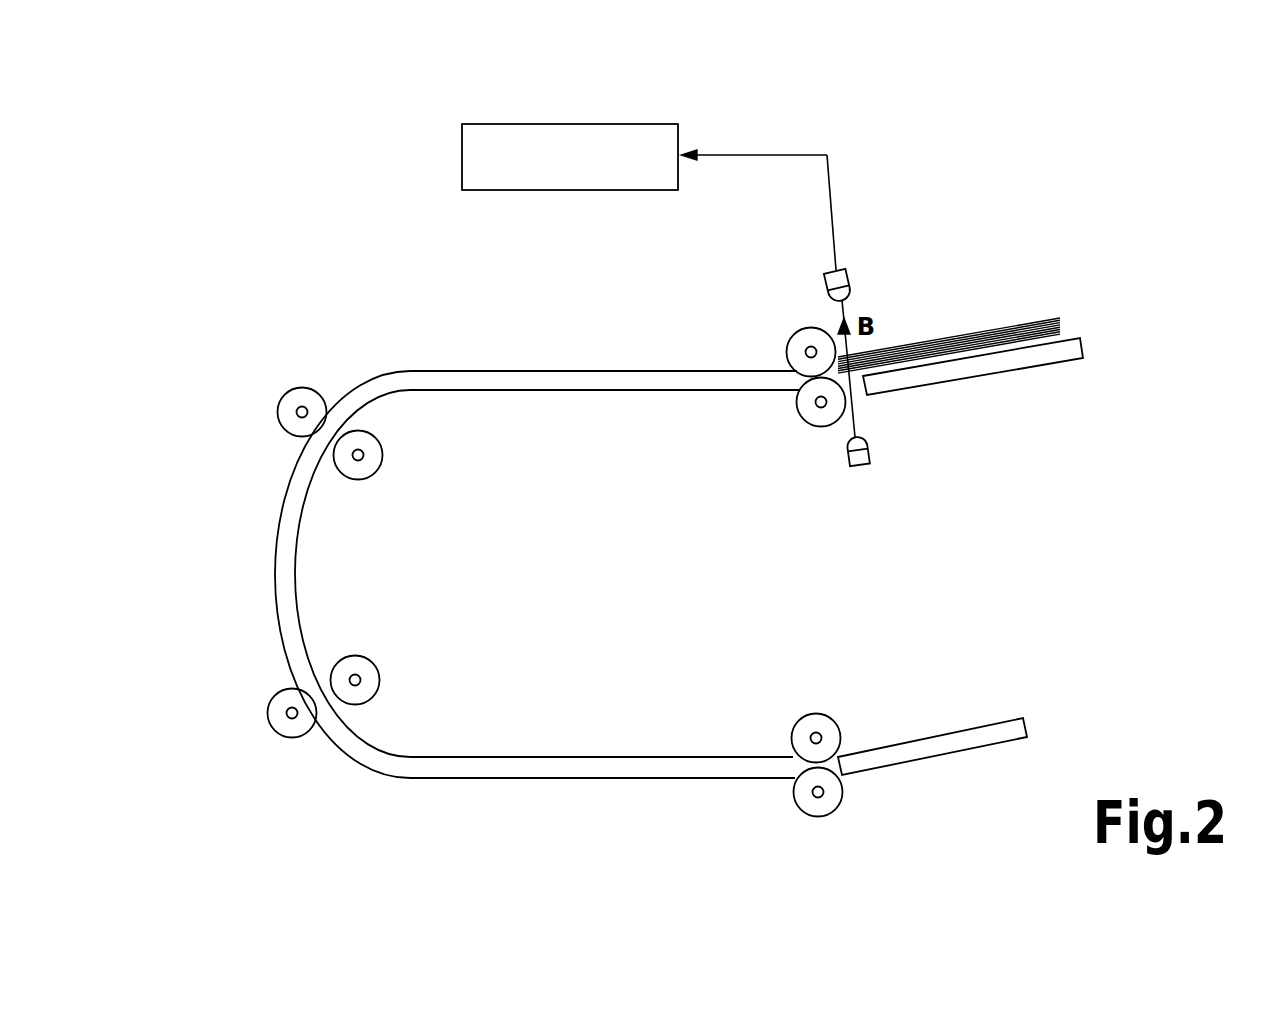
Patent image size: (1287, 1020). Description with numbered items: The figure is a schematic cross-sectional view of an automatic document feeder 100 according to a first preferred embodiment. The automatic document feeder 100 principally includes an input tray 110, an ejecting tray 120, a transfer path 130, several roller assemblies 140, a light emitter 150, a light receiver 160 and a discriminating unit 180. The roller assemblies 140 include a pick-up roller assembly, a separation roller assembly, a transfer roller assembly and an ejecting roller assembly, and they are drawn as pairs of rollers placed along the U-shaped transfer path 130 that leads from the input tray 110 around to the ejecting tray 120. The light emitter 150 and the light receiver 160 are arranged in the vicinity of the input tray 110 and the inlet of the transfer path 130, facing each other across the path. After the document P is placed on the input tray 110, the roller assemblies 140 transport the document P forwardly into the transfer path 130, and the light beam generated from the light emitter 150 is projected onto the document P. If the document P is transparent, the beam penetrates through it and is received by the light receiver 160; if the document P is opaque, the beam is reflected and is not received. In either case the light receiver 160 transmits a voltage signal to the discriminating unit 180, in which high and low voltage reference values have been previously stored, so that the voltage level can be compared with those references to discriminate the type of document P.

The automatic document feeder 100 is at (903, 139).
The input tray 110 is at (1034, 358).
The ejecting tray 120 is at (958, 742).
The transfer path 130 is at (583, 384).
The roller assemblies 140 is at (305, 400).
The light emitter 150 is at (864, 456).
The light receiver 160 is at (846, 283).
The discriminating unit 180 is at (634, 132).
The document P is at (990, 345).